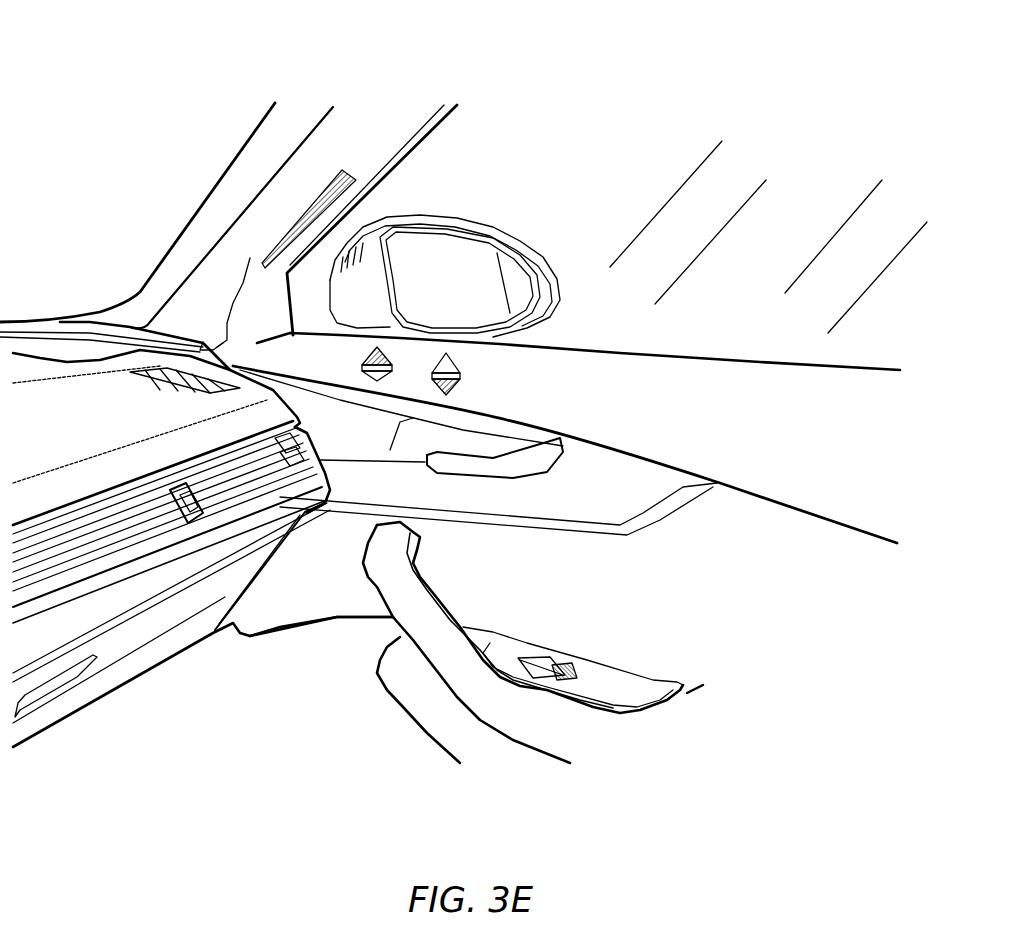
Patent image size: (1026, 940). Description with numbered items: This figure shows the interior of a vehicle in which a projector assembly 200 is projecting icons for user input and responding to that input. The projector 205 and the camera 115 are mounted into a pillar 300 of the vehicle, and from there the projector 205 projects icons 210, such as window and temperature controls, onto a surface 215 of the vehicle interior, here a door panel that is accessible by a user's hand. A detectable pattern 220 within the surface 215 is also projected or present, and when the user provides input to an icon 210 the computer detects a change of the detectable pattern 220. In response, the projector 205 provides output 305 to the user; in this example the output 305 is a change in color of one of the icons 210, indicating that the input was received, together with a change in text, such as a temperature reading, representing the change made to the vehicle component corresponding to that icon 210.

The projector assembly 200 is at (130, 79).
The projector 205 is at (340, 193).
The camera 115 is at (293, 230).
The icon 210 is at (440, 357).
The pillar 300 is at (380, 133).
The output 305 is at (493, 370).
The surface 215 is at (698, 433).
The pattern 220 is at (410, 378).